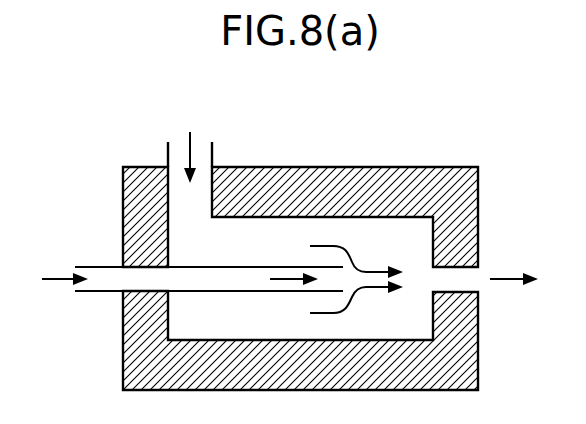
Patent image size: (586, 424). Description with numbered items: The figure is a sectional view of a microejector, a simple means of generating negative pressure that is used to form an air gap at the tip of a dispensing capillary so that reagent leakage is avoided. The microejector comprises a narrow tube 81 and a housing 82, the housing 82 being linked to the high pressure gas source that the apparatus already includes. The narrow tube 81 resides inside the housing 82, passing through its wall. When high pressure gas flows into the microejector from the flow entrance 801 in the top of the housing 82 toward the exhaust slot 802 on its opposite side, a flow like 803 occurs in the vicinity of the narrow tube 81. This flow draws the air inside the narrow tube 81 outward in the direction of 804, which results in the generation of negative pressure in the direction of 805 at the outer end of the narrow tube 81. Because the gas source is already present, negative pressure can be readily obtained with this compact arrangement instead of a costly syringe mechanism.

The housing 82 is at (353, 181).
The narrow tube 81 is at (108, 290).
The flow entrance 801 is at (171, 147).
The exhaust slot 802 is at (514, 264).
The flow 803 is at (356, 273).
The direction of air retraction 804 is at (275, 281).
The direction of negative pressure 805 is at (59, 259).